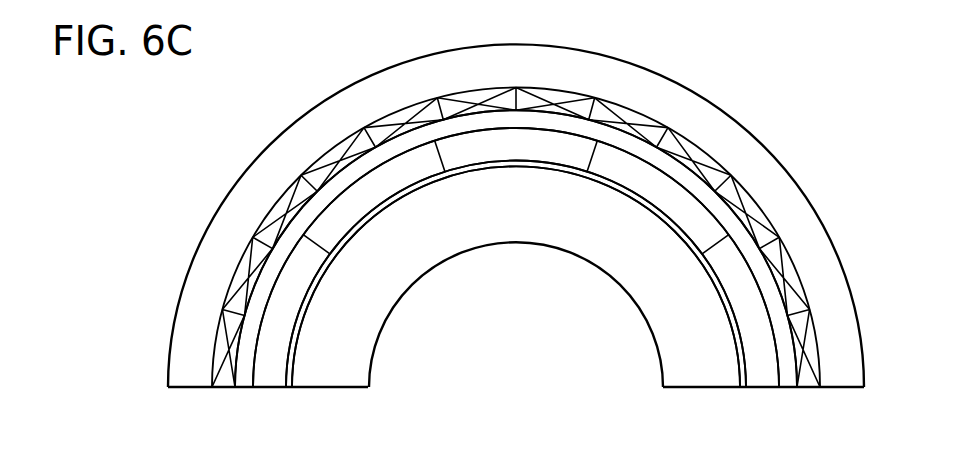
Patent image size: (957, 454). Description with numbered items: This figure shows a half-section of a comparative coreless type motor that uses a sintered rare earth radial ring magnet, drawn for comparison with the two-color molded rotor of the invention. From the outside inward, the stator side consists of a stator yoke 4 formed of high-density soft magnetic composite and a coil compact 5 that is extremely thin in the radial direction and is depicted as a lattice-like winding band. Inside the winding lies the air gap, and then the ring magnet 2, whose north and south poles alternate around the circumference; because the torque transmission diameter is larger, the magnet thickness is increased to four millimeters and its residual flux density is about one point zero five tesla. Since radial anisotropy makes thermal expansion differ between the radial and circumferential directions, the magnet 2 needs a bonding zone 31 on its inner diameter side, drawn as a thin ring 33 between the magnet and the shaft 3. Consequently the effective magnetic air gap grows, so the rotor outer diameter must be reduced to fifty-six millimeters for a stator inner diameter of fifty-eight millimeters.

The bond magnet compact 2 is at (767, 375).
The shaft 3 is at (697, 375).
The stator yoke 4 is at (847, 375).
The coil compact 5 is at (810, 375).
The bonding zone 31 is at (246, 378).
The rotor yoke ring 33 is at (292, 378).